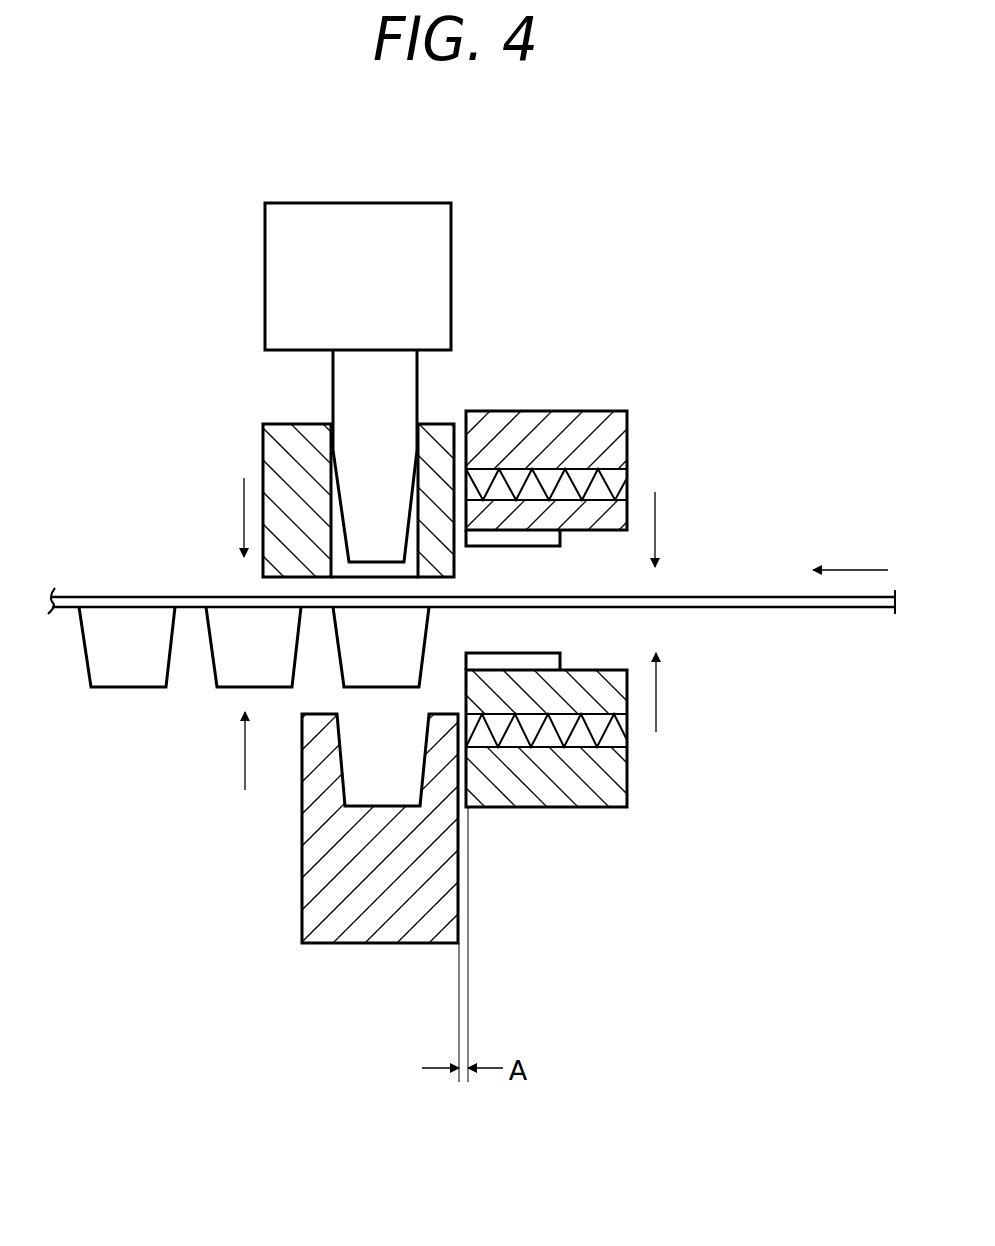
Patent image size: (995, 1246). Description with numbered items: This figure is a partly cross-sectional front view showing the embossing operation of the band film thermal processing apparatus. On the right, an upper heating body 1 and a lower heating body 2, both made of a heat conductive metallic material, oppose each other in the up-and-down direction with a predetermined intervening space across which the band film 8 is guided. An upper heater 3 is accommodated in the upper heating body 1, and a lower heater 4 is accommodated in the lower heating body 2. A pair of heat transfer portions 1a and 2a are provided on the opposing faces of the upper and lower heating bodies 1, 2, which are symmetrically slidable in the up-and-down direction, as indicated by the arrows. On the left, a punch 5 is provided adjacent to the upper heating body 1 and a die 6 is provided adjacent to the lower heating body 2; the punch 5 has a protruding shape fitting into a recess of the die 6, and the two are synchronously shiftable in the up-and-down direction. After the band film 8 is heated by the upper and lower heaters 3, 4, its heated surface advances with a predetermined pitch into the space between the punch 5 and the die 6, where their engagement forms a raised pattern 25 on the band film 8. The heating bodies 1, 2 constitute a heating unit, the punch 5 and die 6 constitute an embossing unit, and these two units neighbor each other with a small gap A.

The upper heating body 1 is at (554, 466).
The heat transfer portion 1a is at (540, 541).
The lower heating body 2 is at (540, 754).
The heat transfer portion 2a is at (532, 653).
The upper heater 3 is at (610, 485).
The lower heater 4 is at (610, 727).
The punch 5 is at (263, 432).
The die 6 is at (320, 930).
The band film 8 is at (778, 607).
The raised pattern 25 is at (128, 680).